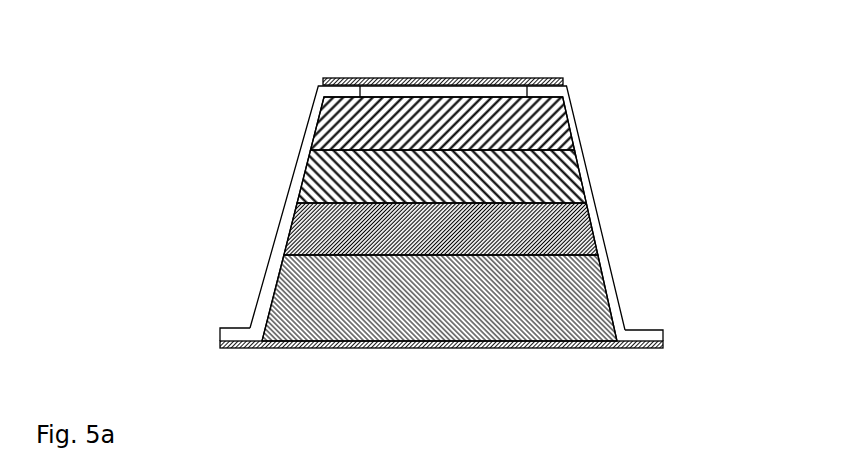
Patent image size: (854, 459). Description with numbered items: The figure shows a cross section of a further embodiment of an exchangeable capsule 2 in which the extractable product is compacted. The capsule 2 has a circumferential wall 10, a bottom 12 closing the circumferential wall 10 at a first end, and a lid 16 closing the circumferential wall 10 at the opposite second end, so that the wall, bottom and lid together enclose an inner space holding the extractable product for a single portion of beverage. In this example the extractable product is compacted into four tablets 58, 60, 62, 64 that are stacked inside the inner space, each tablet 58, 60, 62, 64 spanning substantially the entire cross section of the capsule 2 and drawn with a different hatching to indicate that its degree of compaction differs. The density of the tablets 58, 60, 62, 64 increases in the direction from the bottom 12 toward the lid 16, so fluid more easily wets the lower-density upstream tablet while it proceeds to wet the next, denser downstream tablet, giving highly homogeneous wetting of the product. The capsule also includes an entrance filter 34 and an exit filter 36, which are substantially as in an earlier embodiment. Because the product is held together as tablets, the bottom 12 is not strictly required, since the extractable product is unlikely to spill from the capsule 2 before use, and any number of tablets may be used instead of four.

The exchangeable capsule 2 is at (692, 286).
The circumferential wall 10 is at (595, 228).
The bottom 12 is at (532, 59).
The lid 16 is at (627, 349).
The entrance filter 34 is at (547, 82).
The exit filter 36 is at (567, 349).
The tablet 58 is at (323, 122).
The tablet 60 is at (313, 178).
The tablet 62 is at (300, 236).
The tablet 64 is at (287, 292).